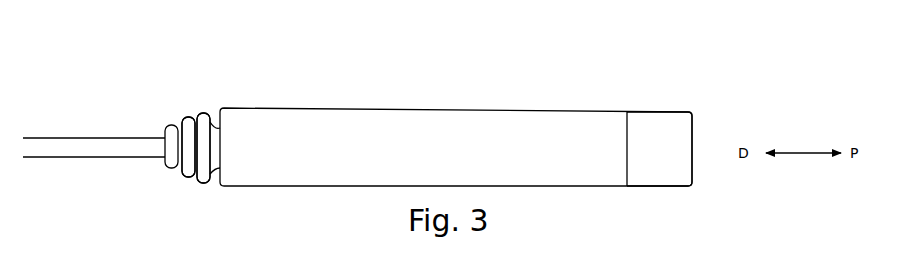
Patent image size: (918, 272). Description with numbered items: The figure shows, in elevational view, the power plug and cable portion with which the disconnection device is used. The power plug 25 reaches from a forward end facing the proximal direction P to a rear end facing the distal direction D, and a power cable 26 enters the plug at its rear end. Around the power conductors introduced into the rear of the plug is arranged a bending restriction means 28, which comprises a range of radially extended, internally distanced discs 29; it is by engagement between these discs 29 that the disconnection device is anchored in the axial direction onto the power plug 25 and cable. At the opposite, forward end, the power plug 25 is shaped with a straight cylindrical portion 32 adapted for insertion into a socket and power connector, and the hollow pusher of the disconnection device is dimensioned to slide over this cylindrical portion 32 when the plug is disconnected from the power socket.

The power plug 25 is at (350, 108).
The power cable 26 is at (73, 138).
The bending restriction means 28 is at (183, 183).
The discs 29 is at (203, 112).
The straight cylindrical portion 32 is at (667, 132).